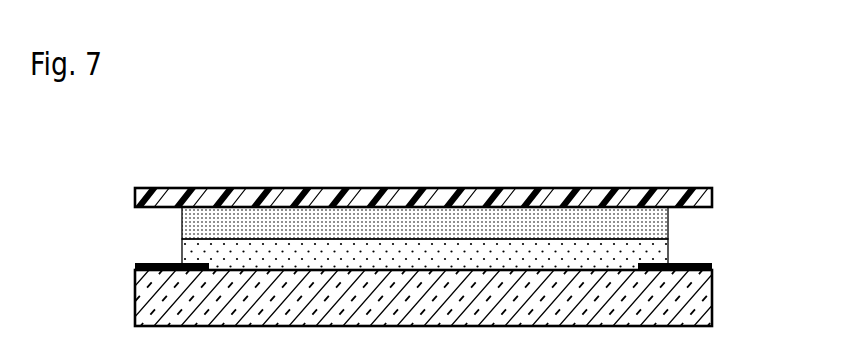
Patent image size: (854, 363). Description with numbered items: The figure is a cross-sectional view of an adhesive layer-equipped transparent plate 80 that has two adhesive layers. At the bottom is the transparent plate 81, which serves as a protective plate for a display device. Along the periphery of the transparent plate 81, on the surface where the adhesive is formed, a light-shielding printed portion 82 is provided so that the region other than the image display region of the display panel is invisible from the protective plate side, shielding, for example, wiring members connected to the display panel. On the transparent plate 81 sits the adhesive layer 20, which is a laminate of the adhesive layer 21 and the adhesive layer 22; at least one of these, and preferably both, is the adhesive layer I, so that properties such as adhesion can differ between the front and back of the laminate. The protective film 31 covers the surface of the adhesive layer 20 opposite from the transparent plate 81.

The adhesive layer-equipped transparent plate 80 is at (676, 168).
The protective film 31 is at (208, 193).
The adhesive layer 20 is at (498, 231).
The adhesive layer 22 is at (655, 227).
The adhesive layer 21 is at (655, 252).
The light-shielding printed portion 82 is at (712, 268).
The transparent plate 81 is at (700, 298).